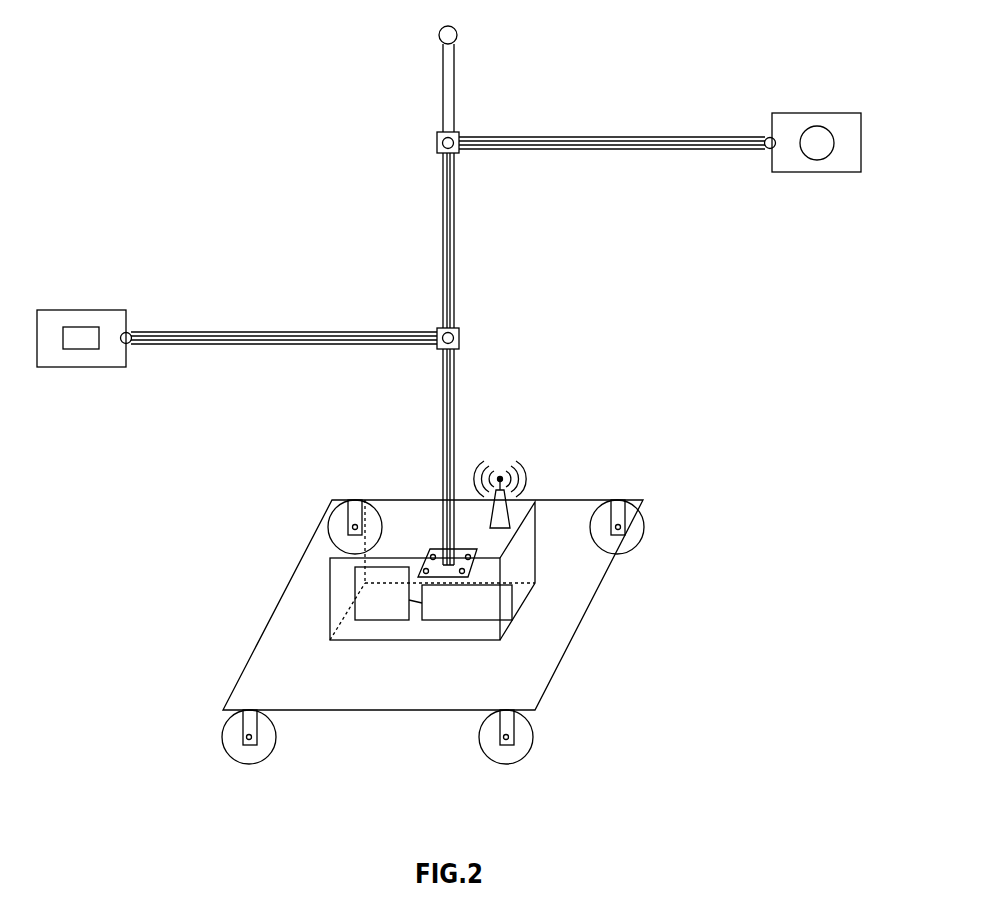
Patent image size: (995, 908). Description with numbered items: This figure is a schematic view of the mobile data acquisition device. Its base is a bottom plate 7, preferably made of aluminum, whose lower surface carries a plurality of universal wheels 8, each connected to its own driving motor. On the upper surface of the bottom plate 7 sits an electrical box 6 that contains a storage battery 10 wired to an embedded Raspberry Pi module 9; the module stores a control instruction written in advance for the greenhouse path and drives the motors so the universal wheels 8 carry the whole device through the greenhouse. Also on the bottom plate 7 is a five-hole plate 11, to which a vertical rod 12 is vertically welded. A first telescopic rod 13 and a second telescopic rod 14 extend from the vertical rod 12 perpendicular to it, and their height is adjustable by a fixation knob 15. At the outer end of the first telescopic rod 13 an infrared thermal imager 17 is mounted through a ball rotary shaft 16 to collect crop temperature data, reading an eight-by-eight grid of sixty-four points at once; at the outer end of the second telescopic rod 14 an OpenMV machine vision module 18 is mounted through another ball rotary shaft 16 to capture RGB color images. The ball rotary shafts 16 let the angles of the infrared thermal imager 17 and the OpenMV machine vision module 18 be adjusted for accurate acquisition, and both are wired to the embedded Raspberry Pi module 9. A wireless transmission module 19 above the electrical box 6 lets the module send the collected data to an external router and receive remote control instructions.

The electrical box 6 is at (538, 576).
The bottom plate 7 is at (590, 603).
The universal wheels 8 is at (249, 737).
The embedded Raspberry Pi module 9 is at (475, 608).
The storage battery 10 is at (380, 594).
The five-hole plate 11 is at (438, 563).
The vertical rod 12 is at (443, 395).
The first telescopic rod 13 is at (347, 332).
The second telescopic rod 14 is at (617, 148).
The fixation knob 15 is at (437, 142).
The ball rotary shaft 16 is at (773, 148).
The infrared thermal imager 17 is at (81, 327).
The OpenMV machine vision module 18 is at (816, 126).
The wireless transmission module 19 is at (517, 490).